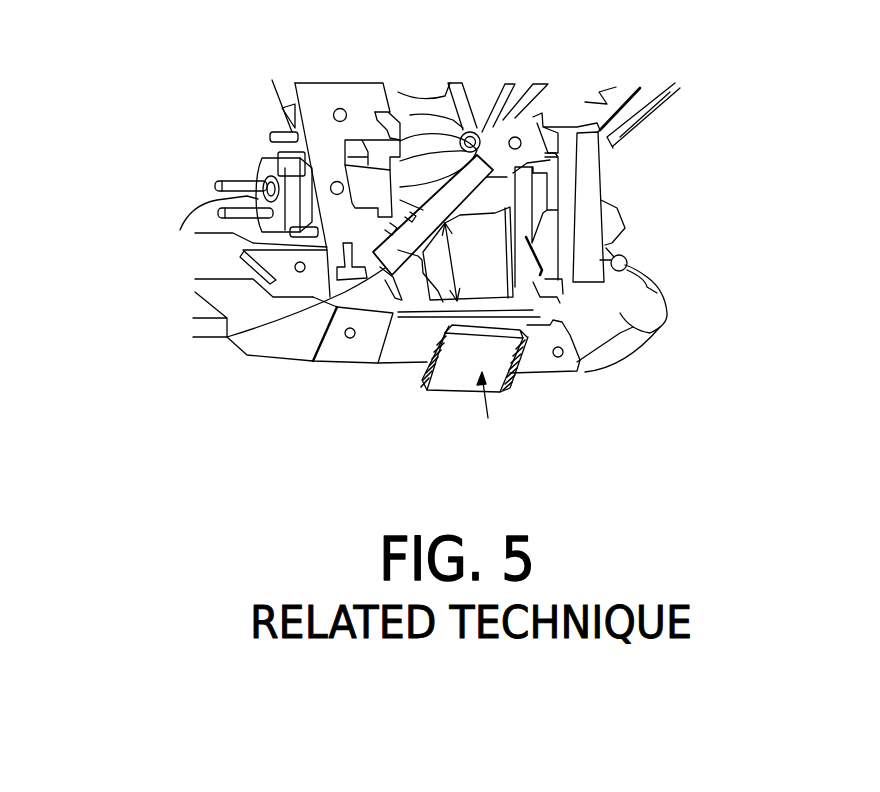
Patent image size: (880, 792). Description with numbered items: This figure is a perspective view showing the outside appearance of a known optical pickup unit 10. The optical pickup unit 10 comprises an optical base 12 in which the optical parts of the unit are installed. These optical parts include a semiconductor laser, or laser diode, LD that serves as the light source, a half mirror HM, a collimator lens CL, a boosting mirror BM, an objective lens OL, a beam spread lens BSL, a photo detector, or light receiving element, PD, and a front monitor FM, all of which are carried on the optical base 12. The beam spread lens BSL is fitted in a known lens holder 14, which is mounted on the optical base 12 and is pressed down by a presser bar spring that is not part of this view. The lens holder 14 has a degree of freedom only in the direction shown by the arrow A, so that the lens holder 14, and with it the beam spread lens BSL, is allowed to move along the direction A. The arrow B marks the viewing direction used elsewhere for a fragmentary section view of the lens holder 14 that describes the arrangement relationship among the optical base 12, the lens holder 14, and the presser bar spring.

The optical pickup unit 10 is at (215, 163).
The optical base 12 is at (608, 340).
The lens holder 14 is at (478, 240).
The collimator lens CL is at (410, 115).
The boosting mirror BM is at (397, 95).
The objective lens OL is at (425, 82).
The front monitor FM is at (515, 213).
The beam spread lens BSL is at (470, 277).
The half mirror HM is at (227, 337).
The semiconductor laser LD is at (217, 200).
The photo detector PD is at (425, 385).
The direction A is at (476, 216).
The arrow B is at (477, 405).